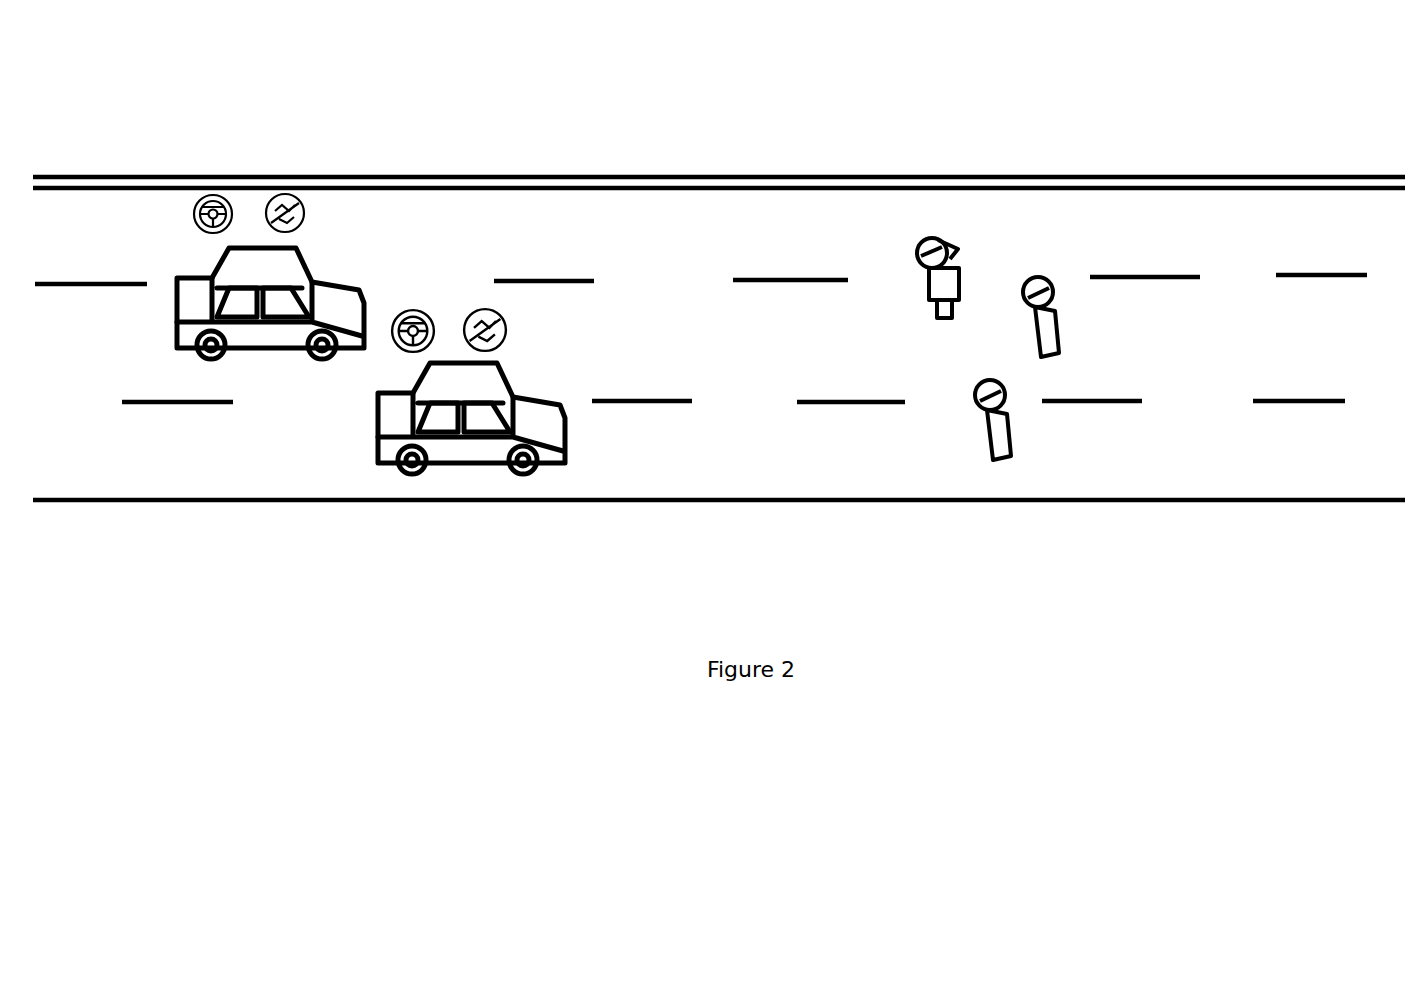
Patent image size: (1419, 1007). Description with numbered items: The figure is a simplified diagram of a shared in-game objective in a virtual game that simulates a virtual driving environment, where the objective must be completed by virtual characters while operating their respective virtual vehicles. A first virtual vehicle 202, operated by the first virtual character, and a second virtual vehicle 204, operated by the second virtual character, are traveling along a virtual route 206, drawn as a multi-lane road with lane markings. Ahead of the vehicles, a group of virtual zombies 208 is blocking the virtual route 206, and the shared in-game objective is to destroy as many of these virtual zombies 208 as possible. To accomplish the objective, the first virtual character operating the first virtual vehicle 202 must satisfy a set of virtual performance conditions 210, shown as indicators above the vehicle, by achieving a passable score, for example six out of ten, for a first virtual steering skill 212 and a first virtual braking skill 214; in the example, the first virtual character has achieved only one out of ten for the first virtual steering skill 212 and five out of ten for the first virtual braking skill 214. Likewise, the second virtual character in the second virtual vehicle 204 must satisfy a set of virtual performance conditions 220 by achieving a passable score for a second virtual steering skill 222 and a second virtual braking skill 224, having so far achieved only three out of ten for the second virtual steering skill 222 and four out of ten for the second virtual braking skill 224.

The first virtual vehicle 202 is at (270, 378).
The second virtual vehicle 204 is at (473, 485).
The virtual route 206 is at (688, 207).
The virtual zombies 208 is at (989, 272).
The set of virtual performance conditions 210 is at (324, 167).
The first virtual steering skill 212 is at (212, 195).
The first virtual braking skill 214 is at (287, 193).
The set of virtual performance conditions 220 is at (529, 306).
The second virtual steering skill 222 is at (412, 308).
The second virtual braking skill 224 is at (480, 307).